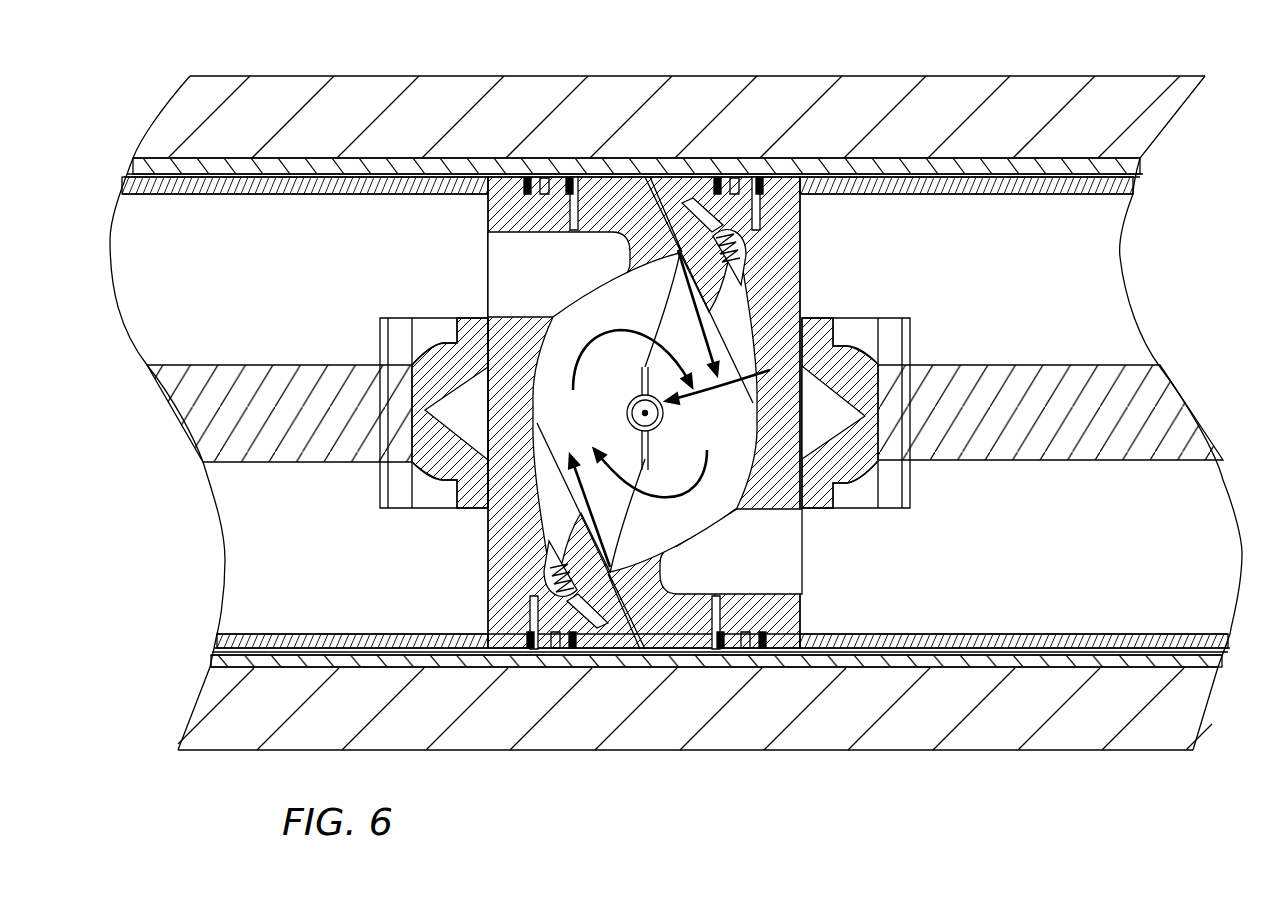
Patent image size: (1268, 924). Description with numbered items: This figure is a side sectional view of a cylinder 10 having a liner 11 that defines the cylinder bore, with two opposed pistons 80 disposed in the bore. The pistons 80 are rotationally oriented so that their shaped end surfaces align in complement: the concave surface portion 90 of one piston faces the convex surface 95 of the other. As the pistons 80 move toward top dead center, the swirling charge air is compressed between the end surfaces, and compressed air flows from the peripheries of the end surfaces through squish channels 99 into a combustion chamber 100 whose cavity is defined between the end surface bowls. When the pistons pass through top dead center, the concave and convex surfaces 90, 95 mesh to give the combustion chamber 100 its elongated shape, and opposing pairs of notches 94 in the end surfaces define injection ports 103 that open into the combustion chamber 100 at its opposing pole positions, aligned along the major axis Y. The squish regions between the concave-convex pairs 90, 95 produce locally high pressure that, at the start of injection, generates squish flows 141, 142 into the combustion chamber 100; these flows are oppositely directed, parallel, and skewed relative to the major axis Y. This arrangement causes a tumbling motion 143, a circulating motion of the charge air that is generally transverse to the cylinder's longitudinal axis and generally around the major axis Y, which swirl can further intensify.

The cylinder 10 is at (525, 750).
The liner 11 is at (1143, 165).
The piston 80 is at (360, 187).
The concave surface portion 90 is at (668, 222).
The notch 94 is at (627, 413).
The convex surface 95 is at (650, 212).
The squish channel 99 is at (645, 193).
The combustion chamber 100 is at (717, 477).
The injection port 103 is at (737, 383).
The squish flow 141 is at (710, 306).
The squish flow 142 is at (580, 507).
The tumbling motion 143 is at (608, 333).
The major axis Y is at (645, 413).